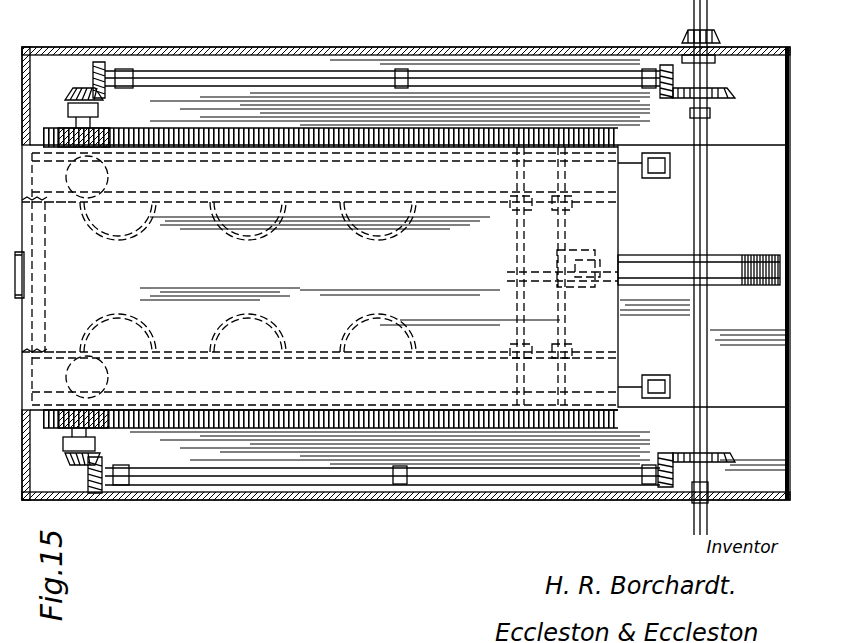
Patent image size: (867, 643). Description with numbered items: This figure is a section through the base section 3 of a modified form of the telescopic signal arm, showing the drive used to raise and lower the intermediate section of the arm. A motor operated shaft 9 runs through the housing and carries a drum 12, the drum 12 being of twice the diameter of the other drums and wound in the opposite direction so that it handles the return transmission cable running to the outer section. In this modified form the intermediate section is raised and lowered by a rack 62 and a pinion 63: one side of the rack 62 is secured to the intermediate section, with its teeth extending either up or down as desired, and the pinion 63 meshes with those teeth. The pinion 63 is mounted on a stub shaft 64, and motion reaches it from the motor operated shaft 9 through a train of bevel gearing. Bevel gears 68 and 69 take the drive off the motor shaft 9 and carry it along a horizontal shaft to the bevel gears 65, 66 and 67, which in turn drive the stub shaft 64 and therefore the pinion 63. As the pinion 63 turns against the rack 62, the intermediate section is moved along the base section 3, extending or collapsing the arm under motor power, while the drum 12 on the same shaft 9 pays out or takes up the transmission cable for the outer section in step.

The base section 3 is at (600, 494).
The motor operated shaft 9 is at (700, 333).
The drum 12 is at (752, 256).
The rack 62 is at (177, 428).
The pinion 63 is at (70, 122).
The stub shaft 64 is at (100, 118).
The bevel gear 65 is at (90, 503).
The bevel gear 66 is at (97, 68).
The bevel gear 67 is at (356, 72).
The bevel gear 68 is at (662, 66).
The bevel gear 69 is at (725, 93).